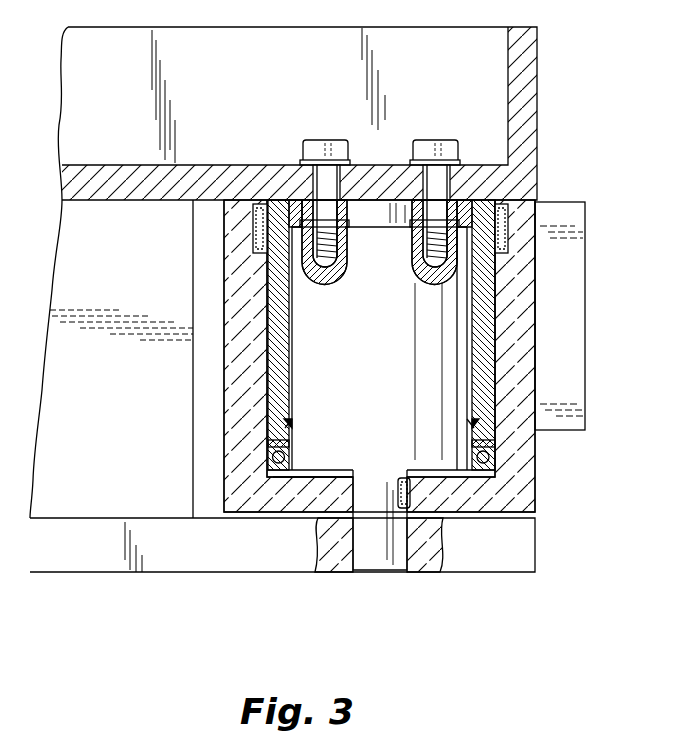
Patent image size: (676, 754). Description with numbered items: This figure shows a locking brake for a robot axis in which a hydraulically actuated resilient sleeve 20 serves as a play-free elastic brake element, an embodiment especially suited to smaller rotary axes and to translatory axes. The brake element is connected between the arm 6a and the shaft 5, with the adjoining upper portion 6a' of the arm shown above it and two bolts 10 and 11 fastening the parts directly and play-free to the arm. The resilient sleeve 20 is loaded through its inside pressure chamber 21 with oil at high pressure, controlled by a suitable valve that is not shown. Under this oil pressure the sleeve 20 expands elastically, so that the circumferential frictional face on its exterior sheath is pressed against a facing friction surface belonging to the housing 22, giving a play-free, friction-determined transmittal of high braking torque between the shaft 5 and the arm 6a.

The shaft 5 is at (393, 573).
The arm 6a is at (587, 319).
The upper support block 6a' is at (323, 272).
The bolt 10 is at (437, 140).
The bolt 11 is at (323, 140).
The resilient sleeve 20 is at (485, 280).
The pressure chamber 21 is at (473, 393).
The housing 22 is at (513, 340).